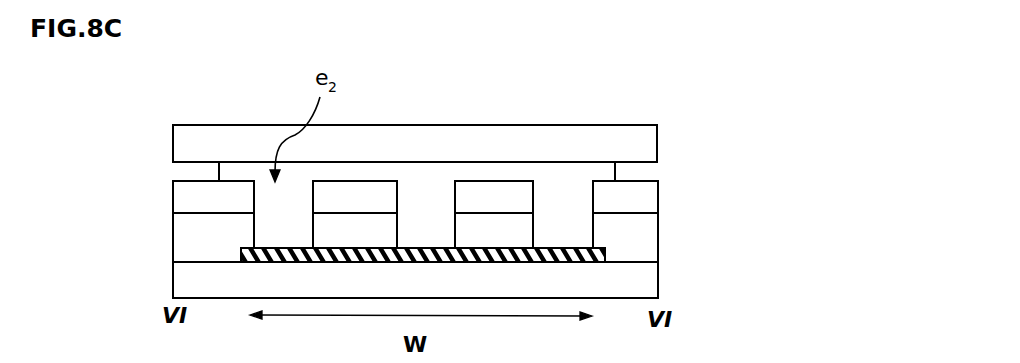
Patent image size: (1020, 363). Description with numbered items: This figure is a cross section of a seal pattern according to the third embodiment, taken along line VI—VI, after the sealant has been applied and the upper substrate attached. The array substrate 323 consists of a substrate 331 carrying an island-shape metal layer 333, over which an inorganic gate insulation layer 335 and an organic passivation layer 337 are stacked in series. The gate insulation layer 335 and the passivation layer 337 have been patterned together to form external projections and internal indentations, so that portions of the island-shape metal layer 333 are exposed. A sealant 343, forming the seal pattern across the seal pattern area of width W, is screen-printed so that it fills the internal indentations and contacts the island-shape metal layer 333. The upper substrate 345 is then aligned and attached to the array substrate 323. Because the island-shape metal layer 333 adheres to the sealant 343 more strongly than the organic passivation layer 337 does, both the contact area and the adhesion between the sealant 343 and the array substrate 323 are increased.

The upper substrate 345 is at (652, 148).
The sealant 343 is at (615, 169).
The organic passivation layer 337 is at (657, 200).
The inorganic gate insulation layer 335 is at (648, 230).
The island-shape metal layer 333 is at (605, 253).
The substrate 331 is at (628, 288).
The array substrate 323 is at (807, 299).